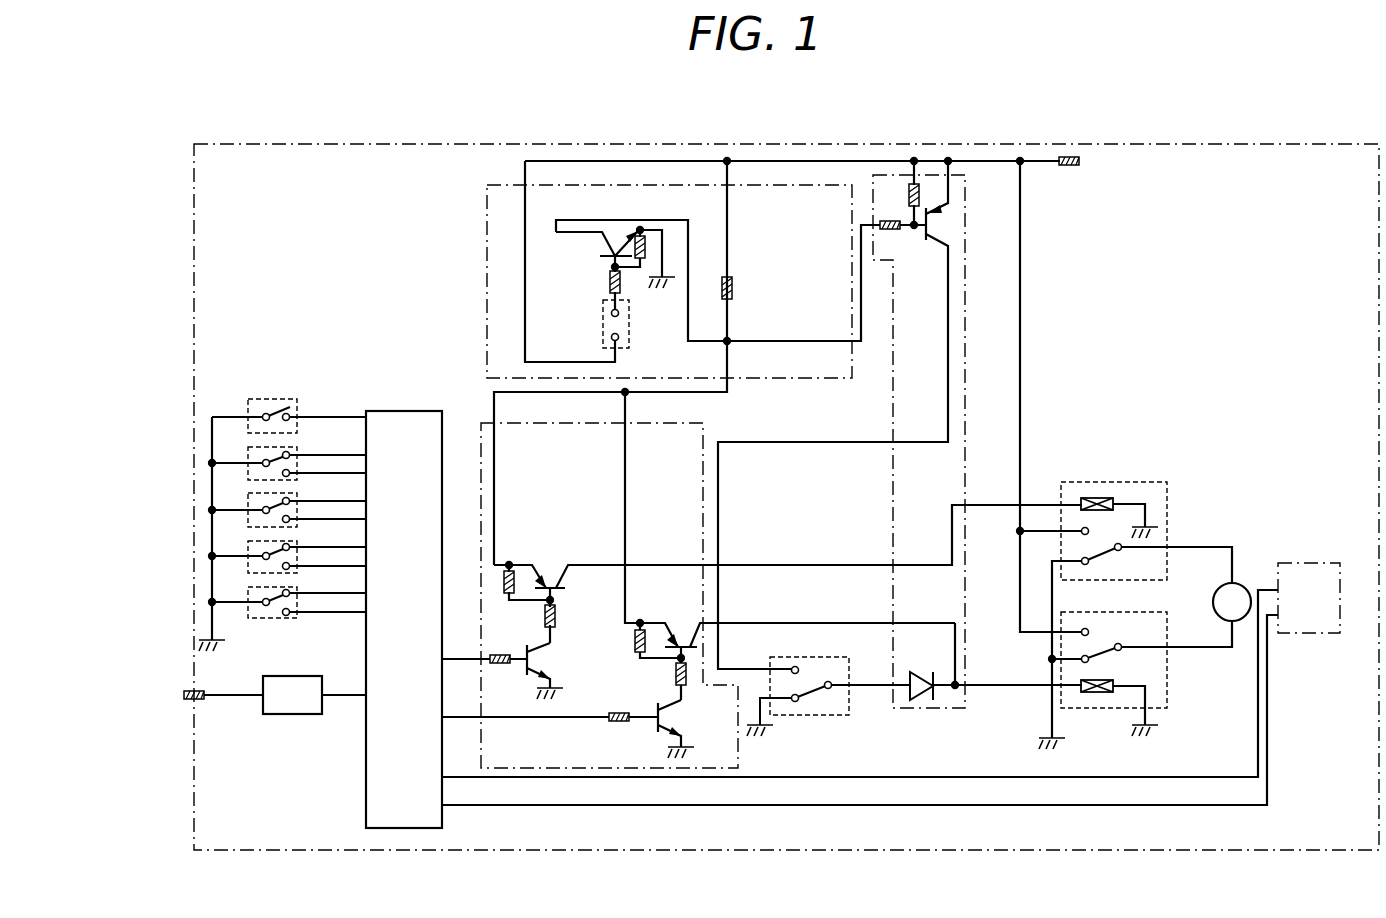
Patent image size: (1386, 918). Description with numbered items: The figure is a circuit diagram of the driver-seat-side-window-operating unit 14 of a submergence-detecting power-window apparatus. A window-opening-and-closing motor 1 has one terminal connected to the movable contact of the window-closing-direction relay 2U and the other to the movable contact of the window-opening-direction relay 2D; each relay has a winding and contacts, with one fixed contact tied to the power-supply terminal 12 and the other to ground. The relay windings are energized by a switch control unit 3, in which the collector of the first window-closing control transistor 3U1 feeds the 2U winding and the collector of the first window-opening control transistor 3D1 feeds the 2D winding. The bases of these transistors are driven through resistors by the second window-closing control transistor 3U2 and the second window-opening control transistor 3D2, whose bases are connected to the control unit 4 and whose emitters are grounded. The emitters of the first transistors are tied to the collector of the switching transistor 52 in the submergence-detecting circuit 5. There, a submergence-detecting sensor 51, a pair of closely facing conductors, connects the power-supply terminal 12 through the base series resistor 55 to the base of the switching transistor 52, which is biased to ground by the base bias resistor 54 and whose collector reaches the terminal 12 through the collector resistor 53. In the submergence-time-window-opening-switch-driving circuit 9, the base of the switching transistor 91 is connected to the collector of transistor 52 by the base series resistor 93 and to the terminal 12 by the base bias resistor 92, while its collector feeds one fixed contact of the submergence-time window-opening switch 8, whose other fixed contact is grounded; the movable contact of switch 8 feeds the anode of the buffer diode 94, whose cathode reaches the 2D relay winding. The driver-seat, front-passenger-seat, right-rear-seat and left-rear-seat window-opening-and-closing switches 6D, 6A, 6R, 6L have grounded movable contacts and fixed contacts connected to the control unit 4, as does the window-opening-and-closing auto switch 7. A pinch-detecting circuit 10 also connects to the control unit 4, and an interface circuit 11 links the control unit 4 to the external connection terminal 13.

The window-opening-and-closing motor 1 is at (1218, 590).
The window-closing-direction relay 2U is at (1136, 482).
The window-opening-direction relay 2D is at (1100, 709).
The switch control unit 3 is at (680, 424).
The first window-closing control transistor 3U1 is at (550, 574).
The second window-closing control transistor 3U2 is at (545, 660).
The first window-opening control transistor 3D1 is at (679, 630).
The second window-opening control transistor 3D2 is at (675, 718).
The control unit 4 is at (418, 409).
The submergence-detecting circuit 5 is at (808, 185).
The submergence-detecting sensor 51 is at (603, 313).
The switching transistor 52 is at (616, 237).
The collector resistor 53 is at (734, 290).
The base bias resistor 54 is at (646, 247).
The base series resistor 55 is at (606, 282).
The driver-seat-window-opening-and-closing switch 6D is at (290, 444).
The front-passenger-seat-window-opening-and-closing switch 6A is at (290, 490).
The right-rear-seat-window-opening-and-closing switch 6R is at (290, 536).
The left-rear-seat-window-opening-and-closing switch 6L is at (290, 582).
The window-opening-and-closing auto switch 7 is at (284, 397).
The submergence-time window-opening switch 8 is at (840, 656).
The submergence-time-window-opening-switch-driving circuit 9 is at (965, 281).
The switching transistor 91 is at (944, 229).
The base bias resistor 92 is at (918, 197).
The base series resistor 93 is at (893, 235).
The buffer diode 94 is at (925, 672).
The pinch-detecting circuit 10 is at (1295, 563).
The interface circuit 11 is at (305, 675).
The power-supply terminal 12 is at (1069, 167).
The external connection terminal 13 is at (201, 689).
The driver-seat-side-window-operating unit 14 is at (680, 144).